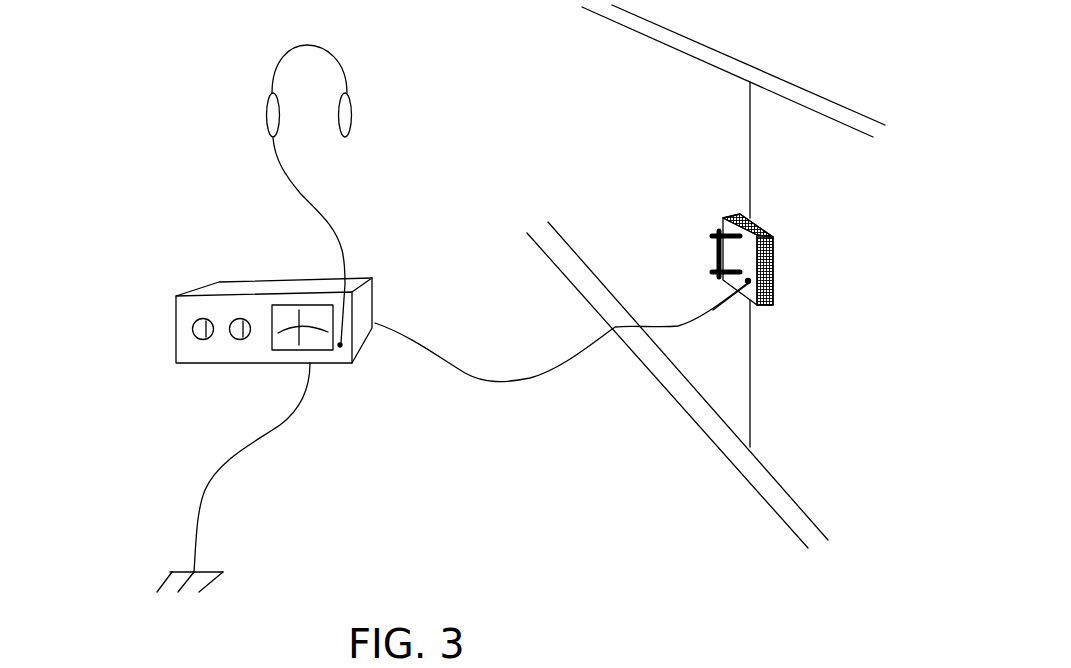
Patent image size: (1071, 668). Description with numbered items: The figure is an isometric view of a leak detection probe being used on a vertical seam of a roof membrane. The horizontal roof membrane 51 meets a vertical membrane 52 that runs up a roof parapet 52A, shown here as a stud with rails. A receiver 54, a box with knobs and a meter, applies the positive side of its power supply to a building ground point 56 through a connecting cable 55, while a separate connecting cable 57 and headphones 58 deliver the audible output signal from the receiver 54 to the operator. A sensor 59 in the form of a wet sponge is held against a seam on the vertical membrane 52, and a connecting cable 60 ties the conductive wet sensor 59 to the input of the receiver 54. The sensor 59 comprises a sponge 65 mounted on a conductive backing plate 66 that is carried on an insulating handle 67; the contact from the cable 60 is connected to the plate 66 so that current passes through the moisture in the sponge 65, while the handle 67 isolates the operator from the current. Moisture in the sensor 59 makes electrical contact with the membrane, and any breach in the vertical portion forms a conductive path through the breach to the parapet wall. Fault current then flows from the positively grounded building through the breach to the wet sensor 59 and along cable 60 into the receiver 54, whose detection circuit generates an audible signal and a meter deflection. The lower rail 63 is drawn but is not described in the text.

The horizontal roof membrane 51 is at (590, 412).
The vertical membrane 52 is at (743, 183).
The roof parapet 52A is at (758, 70).
The receiver 54 is at (193, 283).
The connecting cable 55 is at (232, 447).
The building ground point 56 is at (162, 562).
The connecting cable 57 is at (290, 203).
The headphones 58 is at (261, 113).
The sensor 59 is at (718, 237).
The connecting cable 60 is at (525, 360).
The lower rail 63 is at (690, 432).
The sponge 65 is at (775, 277).
The backing plate 66 is at (773, 235).
The insulating handle 67 is at (712, 252).